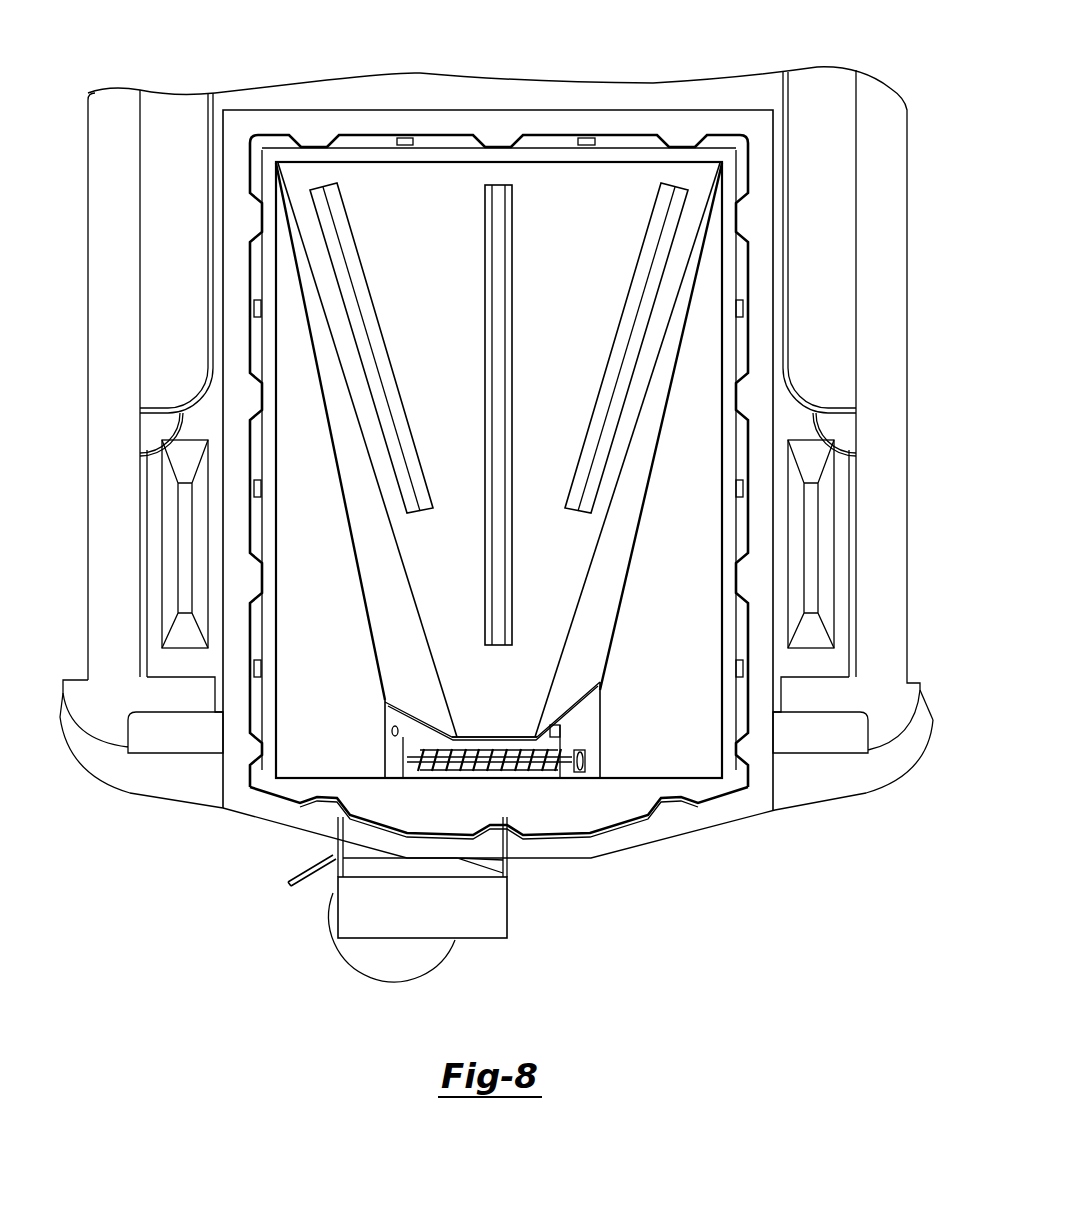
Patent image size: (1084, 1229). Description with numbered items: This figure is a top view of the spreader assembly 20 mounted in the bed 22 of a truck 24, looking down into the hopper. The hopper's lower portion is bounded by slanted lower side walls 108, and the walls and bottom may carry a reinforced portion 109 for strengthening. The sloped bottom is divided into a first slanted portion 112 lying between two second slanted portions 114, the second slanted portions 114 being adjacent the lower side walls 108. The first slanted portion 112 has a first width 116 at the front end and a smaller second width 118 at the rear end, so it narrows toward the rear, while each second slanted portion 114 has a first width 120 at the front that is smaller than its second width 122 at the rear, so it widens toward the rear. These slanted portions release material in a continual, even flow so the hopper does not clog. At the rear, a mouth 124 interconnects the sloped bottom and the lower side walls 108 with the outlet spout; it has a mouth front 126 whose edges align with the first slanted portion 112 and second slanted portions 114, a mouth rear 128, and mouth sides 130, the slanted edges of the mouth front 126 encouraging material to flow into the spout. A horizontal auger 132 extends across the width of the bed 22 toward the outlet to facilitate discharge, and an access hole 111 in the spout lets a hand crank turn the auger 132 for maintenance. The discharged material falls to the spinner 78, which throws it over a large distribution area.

The spreader assembly 20 is at (233, 853).
The bed 22 is at (813, 673).
The truck 24 is at (907, 132).
The spinner 78 is at (512, 912).
The lower side walls 108 is at (328, 620).
The reinforced portion 109 is at (499, 414).
The access hole 111 is at (393, 730).
The first slanted portion 112 is at (560, 405).
The second slanted portion 114 is at (499, 450).
The first width 116 is at (455, 165).
The second width 118 is at (513, 722).
The first width 120 is at (287, 225).
The second width 122 is at (415, 672).
The mouth 124 is at (423, 782).
The mouth front 126 is at (500, 725).
The mouth rear 128 is at (535, 780).
The mouth sides 130 is at (385, 750).
The horizontal auger 132 is at (463, 750).